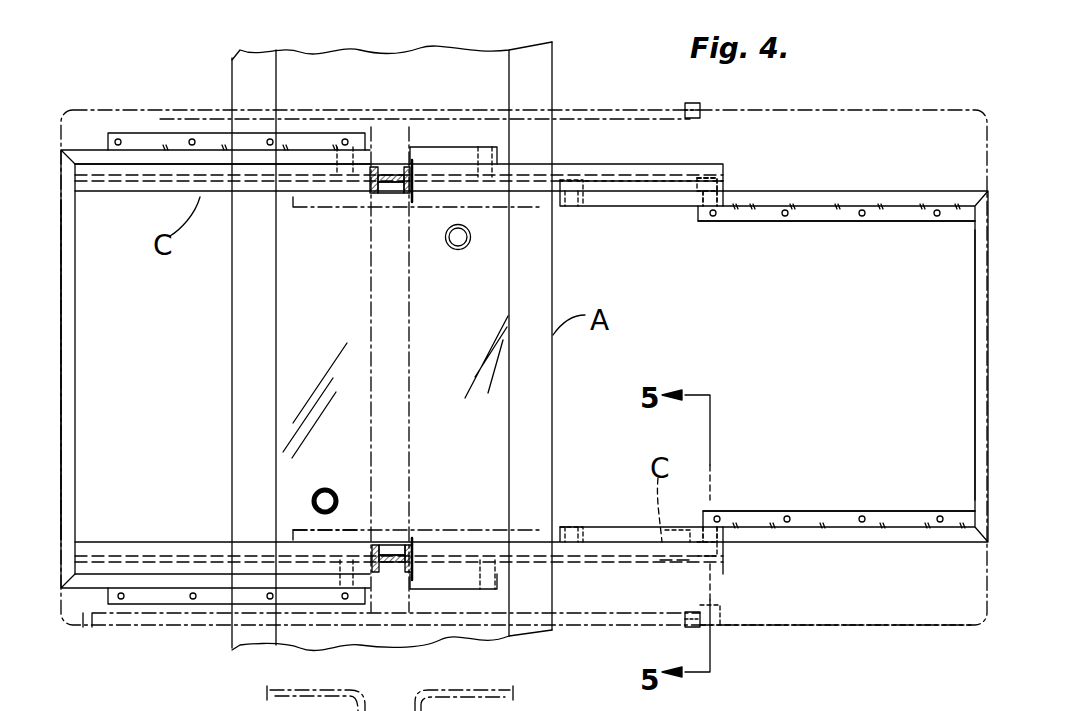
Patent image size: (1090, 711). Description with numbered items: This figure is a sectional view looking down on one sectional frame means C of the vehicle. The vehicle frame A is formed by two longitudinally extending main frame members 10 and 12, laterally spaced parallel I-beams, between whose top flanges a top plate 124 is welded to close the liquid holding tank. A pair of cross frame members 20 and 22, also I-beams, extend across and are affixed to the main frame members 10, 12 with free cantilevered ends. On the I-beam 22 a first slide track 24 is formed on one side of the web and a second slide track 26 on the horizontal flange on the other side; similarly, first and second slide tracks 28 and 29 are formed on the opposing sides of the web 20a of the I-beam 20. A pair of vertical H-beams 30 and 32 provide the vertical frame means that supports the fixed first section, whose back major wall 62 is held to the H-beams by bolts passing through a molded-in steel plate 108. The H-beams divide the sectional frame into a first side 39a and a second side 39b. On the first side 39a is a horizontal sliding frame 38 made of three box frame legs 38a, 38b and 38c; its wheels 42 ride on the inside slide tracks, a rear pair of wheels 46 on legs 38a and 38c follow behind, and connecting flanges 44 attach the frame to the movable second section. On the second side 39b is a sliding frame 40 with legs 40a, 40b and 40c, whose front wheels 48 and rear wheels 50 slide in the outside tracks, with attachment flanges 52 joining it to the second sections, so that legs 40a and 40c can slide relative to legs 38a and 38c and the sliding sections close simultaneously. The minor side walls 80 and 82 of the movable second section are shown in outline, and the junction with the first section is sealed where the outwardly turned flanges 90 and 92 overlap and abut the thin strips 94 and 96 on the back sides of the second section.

The main frame member 10 is at (553, 56).
The main frame member 12 is at (232, 62).
The cross frame member 20 is at (635, 162).
The web 20a is at (688, 160).
The cross frame member 22 is at (600, 568).
The first slide track 24 is at (725, 592).
The second slide track 26 is at (672, 545).
The first slide track 28 is at (668, 185).
The second slide track 29 is at (617, 175).
The vertical H-beam 30 is at (390, 170).
The vertical H-beam 32 is at (395, 562).
The horizontal sliding frame 38 is at (823, 222).
The leg 38a is at (843, 191).
The leg 38b is at (975, 375).
The leg 38c is at (825, 535).
The first side 39a is at (669, 573).
The second side 39b is at (273, 540).
The horizontal sliding frame 40 is at (170, 580).
The leg 40a is at (140, 585).
The leg 40b is at (75, 407).
The leg 40c is at (92, 157).
The wheels 42 is at (727, 182).
The connecting flanges 44 is at (908, 222).
The rear wheels 46 is at (582, 191).
The front wheels 48 is at (335, 478).
The rear wheels 50 is at (494, 542).
The attachment flanges 52 is at (143, 138).
The back major wall 62 is at (371, 304).
The minor side wall 80 is at (887, 108).
The minor side wall 82 is at (855, 625).
The flange 90 is at (700, 108).
The flange 92 is at (758, 620).
The thin strip 94 is at (686, 108).
The thin strip 96 is at (683, 618).
The steel plate 108 is at (415, 160).
The top plate 124 is at (342, 283).